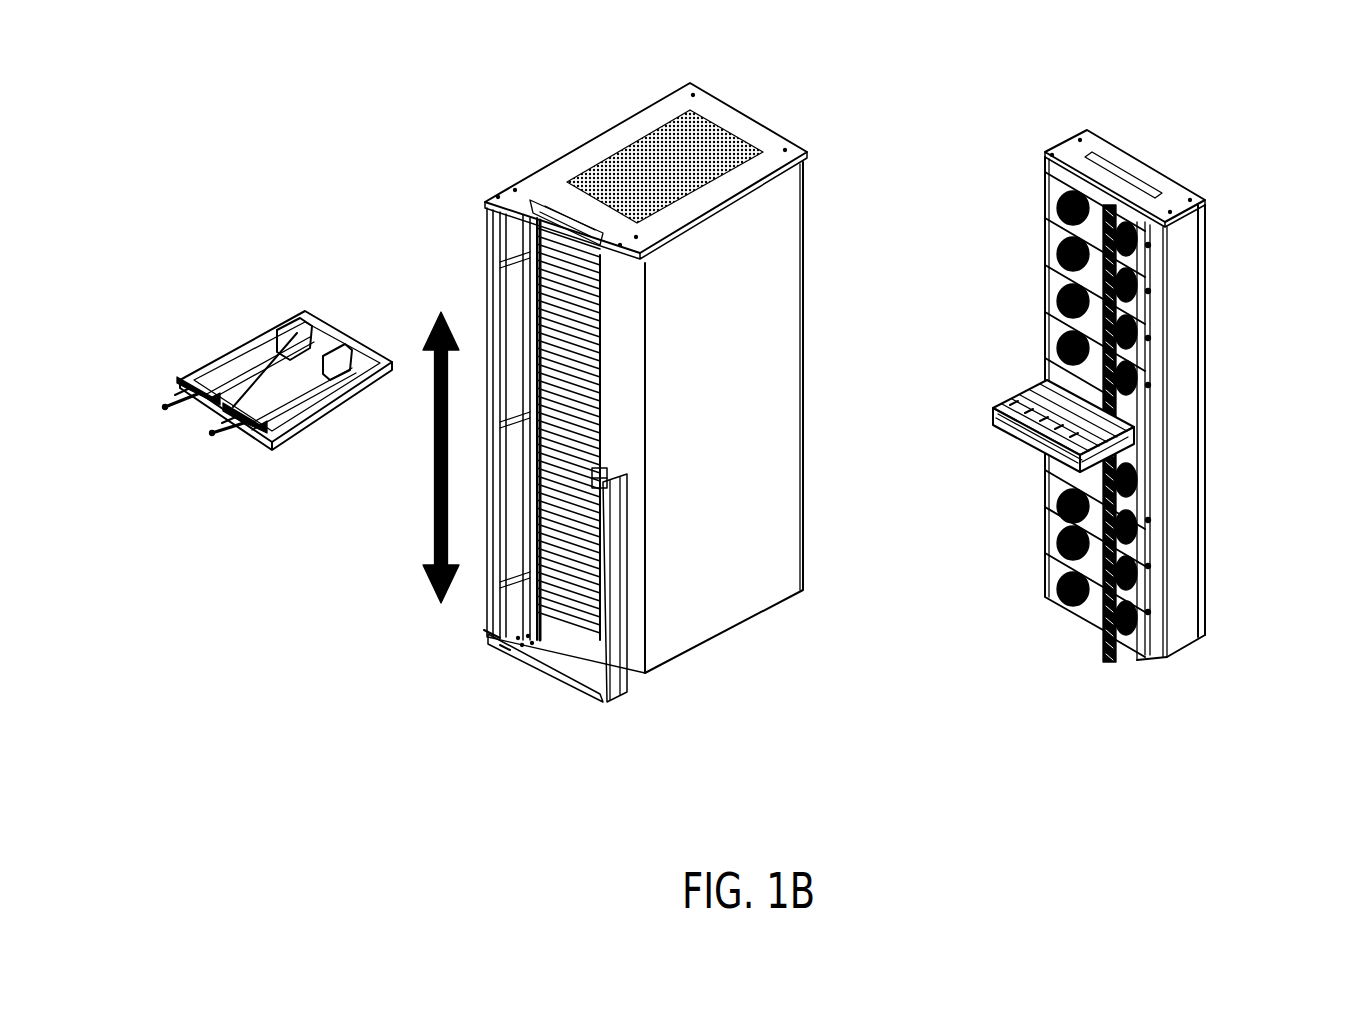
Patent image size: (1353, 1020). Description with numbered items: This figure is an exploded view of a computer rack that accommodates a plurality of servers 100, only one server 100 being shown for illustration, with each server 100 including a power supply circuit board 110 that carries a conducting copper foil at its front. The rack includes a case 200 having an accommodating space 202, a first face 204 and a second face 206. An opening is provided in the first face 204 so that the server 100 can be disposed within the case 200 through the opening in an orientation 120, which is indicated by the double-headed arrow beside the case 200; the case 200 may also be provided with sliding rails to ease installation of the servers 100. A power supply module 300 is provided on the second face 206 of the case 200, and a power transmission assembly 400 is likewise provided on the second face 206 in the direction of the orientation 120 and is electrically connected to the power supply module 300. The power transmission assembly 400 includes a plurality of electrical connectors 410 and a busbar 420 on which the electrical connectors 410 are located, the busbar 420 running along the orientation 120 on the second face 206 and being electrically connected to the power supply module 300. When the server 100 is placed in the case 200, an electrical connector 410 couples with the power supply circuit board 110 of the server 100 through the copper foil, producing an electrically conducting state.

The server 100 is at (226, 327).
The power supply circuit board 110 is at (388, 355).
The orientation 120 is at (433, 462).
The case 200 is at (550, 135).
The accommodating space 202 is at (550, 650).
The first face 204 is at (463, 222).
The second face 206 is at (1048, 138).
The power supply module 300 is at (996, 378).
The power transmission assembly 400 is at (1170, 348).
The electrical connector 410 is at (1102, 633).
The busbar 420 is at (1123, 250).